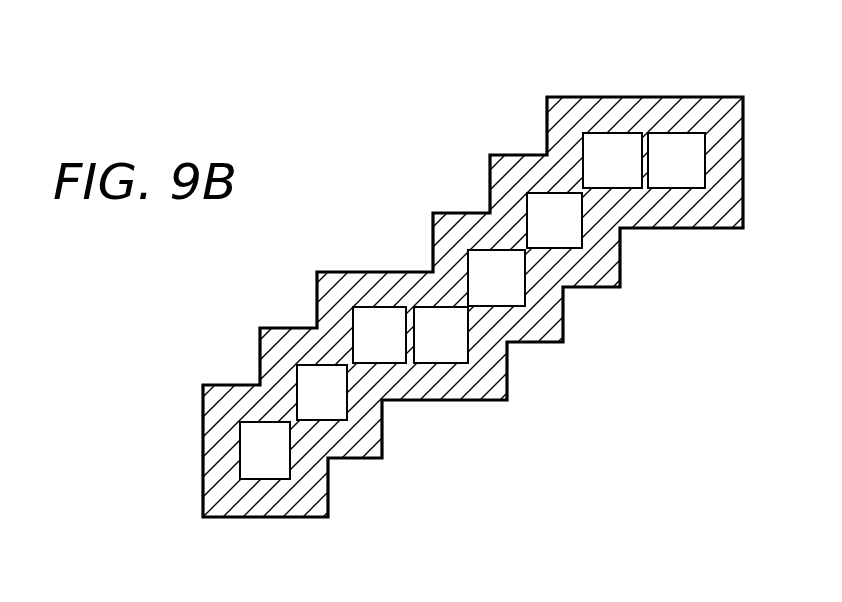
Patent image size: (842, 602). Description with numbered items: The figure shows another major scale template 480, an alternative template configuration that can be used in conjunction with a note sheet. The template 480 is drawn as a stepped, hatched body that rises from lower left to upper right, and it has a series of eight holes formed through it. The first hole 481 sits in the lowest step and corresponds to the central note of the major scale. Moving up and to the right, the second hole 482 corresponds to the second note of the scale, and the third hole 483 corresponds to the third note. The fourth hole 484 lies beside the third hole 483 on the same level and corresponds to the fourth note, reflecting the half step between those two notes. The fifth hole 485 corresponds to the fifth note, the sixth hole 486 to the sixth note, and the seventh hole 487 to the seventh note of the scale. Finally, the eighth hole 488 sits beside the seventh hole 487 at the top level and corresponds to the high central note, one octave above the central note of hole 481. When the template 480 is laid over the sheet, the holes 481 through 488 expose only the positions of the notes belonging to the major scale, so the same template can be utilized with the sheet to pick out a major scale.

The major scale template 480 is at (256, 518).
The hole for central note 481 is at (263, 450).
The hole for second note 482 is at (318, 377).
The hole for third note 483 is at (375, 313).
The hole for fourth note 484 is at (432, 348).
The hole for fifth note 485 is at (488, 265).
The hole for sixth note 486 is at (547, 203).
The hole for seventh note 487 is at (603, 145).
The hole for high central note 488 is at (692, 145).